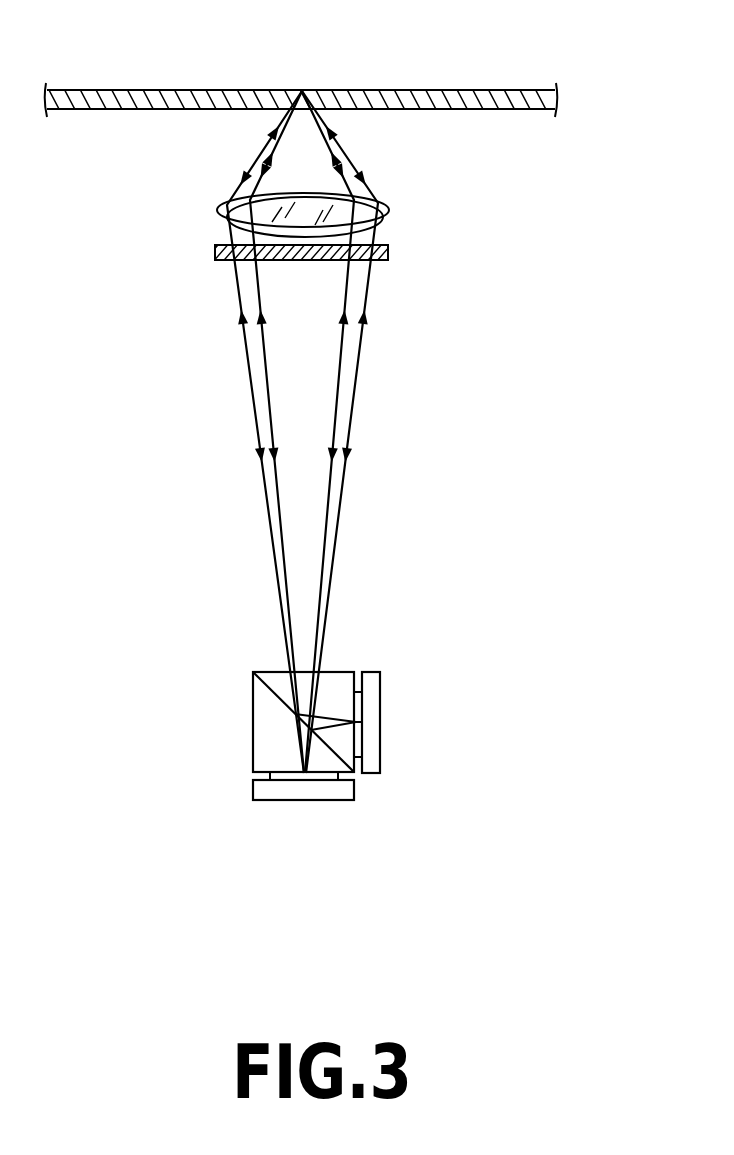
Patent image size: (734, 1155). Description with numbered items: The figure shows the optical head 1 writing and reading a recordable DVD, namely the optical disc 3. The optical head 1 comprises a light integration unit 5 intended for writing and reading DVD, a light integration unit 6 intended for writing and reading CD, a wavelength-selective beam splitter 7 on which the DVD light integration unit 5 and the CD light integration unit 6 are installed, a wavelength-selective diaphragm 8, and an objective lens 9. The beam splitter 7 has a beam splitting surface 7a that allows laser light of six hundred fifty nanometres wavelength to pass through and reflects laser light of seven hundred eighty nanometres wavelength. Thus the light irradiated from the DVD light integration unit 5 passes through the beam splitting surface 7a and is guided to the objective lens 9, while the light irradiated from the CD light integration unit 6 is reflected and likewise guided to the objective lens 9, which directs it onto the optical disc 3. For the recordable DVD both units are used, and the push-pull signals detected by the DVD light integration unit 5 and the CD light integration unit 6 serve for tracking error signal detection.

The optical head 1 is at (445, 548).
The optical disc 3 is at (348, 96).
The light integration unit 5 is at (298, 793).
The light integration unit 6 is at (373, 708).
The wavelength-selective beam splitter 7 is at (256, 734).
The beam splitting surface 7a is at (266, 692).
The wavelength-selective diaphragm 8 is at (389, 247).
The objective lens 9 is at (365, 207).